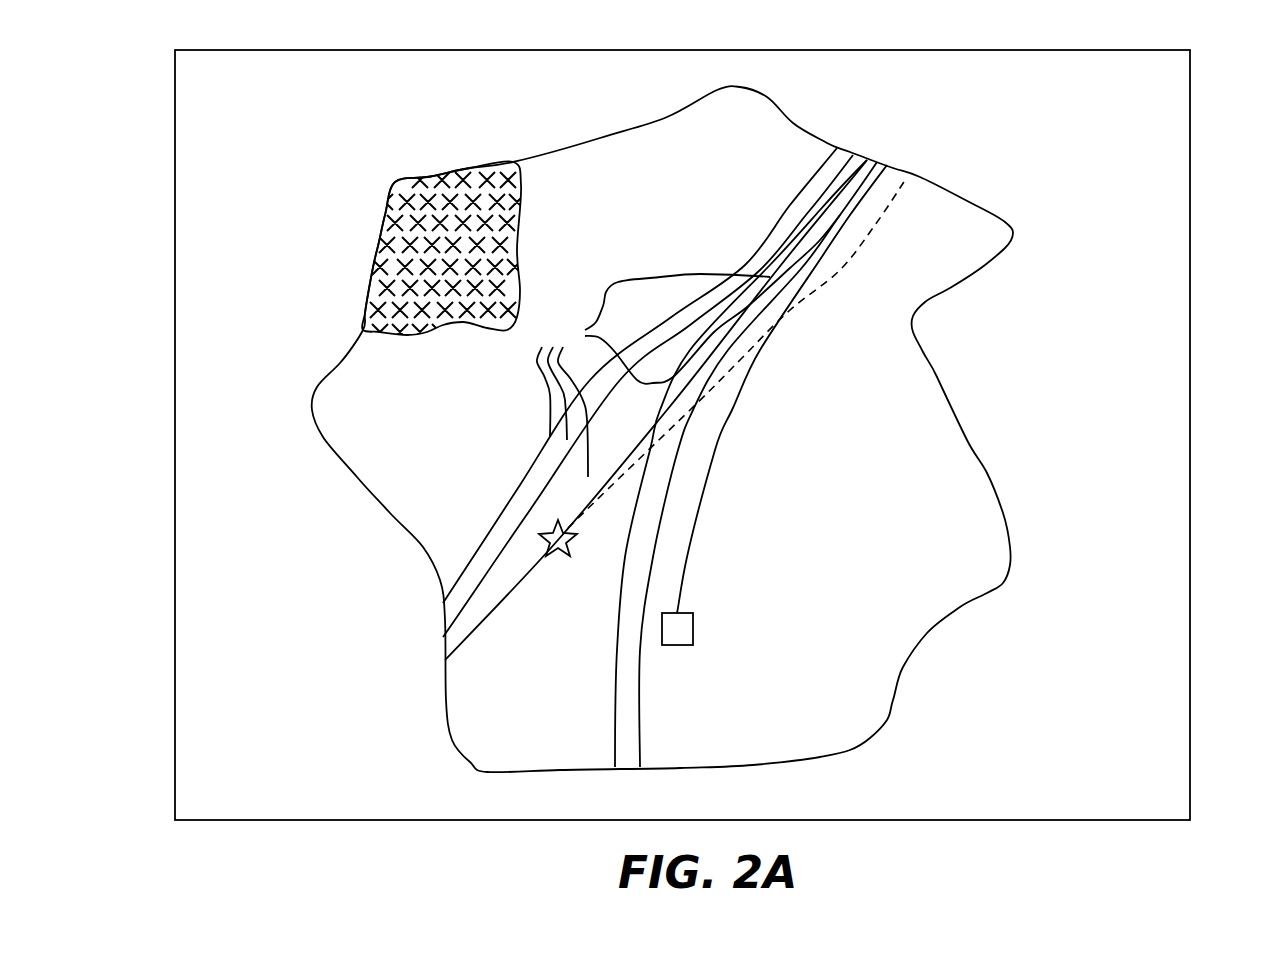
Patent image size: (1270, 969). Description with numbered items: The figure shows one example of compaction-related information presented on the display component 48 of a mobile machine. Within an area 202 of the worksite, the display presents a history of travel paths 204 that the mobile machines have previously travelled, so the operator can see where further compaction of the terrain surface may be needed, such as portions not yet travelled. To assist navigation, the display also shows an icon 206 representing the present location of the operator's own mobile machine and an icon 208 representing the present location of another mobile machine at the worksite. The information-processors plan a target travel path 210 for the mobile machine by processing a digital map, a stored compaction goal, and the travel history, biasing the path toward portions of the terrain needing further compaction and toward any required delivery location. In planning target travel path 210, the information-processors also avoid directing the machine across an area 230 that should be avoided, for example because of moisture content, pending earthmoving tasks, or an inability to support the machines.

The display component 48 is at (1190, 200).
The area 202 is at (936, 381).
The history of travel paths 204 is at (688, 346).
The icon 206 is at (553, 556).
The icon 208 is at (693, 628).
The target travel path 210 is at (605, 495).
The area 230 is at (427, 178).